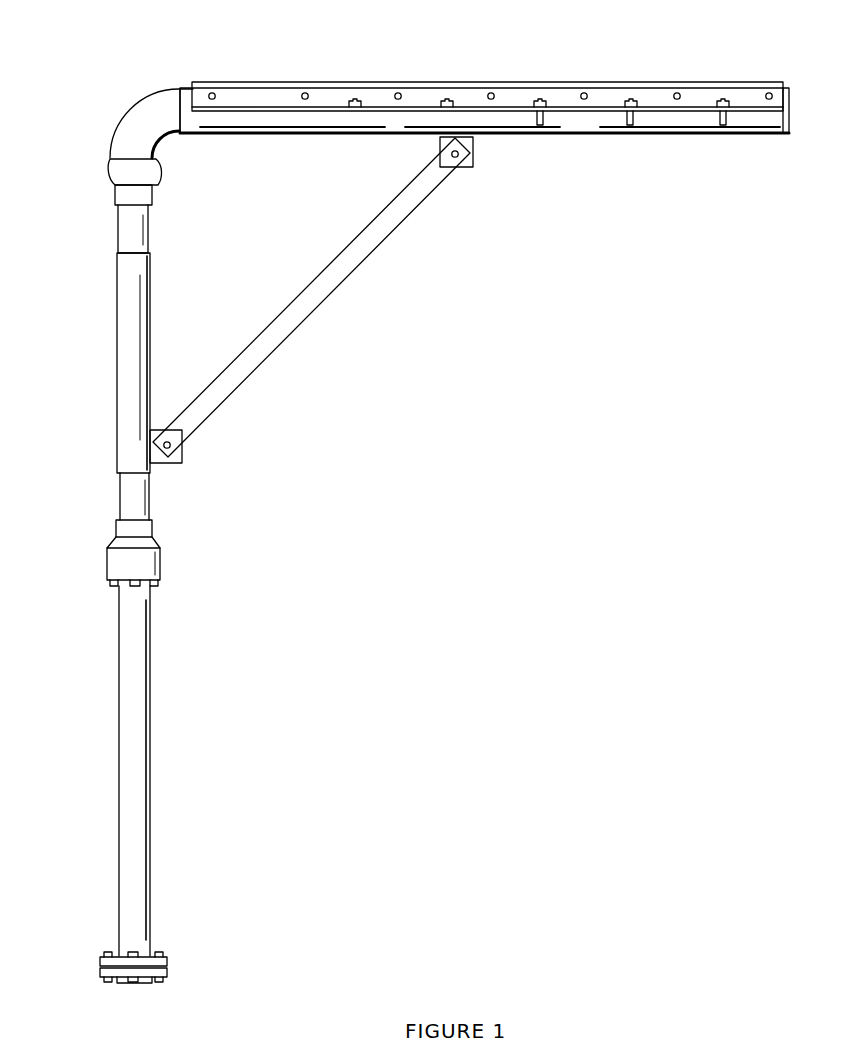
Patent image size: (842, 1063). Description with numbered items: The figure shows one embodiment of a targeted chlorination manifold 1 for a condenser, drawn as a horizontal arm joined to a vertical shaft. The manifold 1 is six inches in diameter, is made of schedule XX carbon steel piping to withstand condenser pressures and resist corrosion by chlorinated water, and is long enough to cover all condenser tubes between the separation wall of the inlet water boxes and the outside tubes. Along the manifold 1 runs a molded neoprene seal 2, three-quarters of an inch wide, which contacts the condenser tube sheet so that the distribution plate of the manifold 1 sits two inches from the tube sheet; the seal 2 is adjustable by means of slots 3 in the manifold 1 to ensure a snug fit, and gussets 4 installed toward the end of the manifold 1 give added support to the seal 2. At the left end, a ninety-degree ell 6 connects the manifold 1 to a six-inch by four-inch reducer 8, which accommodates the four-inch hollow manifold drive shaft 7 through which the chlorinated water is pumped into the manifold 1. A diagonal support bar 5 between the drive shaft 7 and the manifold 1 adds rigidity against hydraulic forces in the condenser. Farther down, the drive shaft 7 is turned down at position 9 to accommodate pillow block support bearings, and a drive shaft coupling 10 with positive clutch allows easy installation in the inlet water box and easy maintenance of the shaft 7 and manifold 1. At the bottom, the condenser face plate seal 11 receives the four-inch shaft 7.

The targeted chlorination manifold 1 is at (548, 137).
The seal 2 is at (734, 84).
The slots 3 is at (637, 100).
The gussets 4 is at (722, 128).
The support bar 5 is at (385, 237).
The 90° ell 6 is at (113, 128).
The manifold drive shaft 7 is at (117, 372).
The 6-inch by 4-inch reducer 8 is at (109, 181).
The position 9 is at (118, 236).
The drive shaft coupling 10 is at (107, 564).
The condenser face plate seal 11 is at (100, 966).